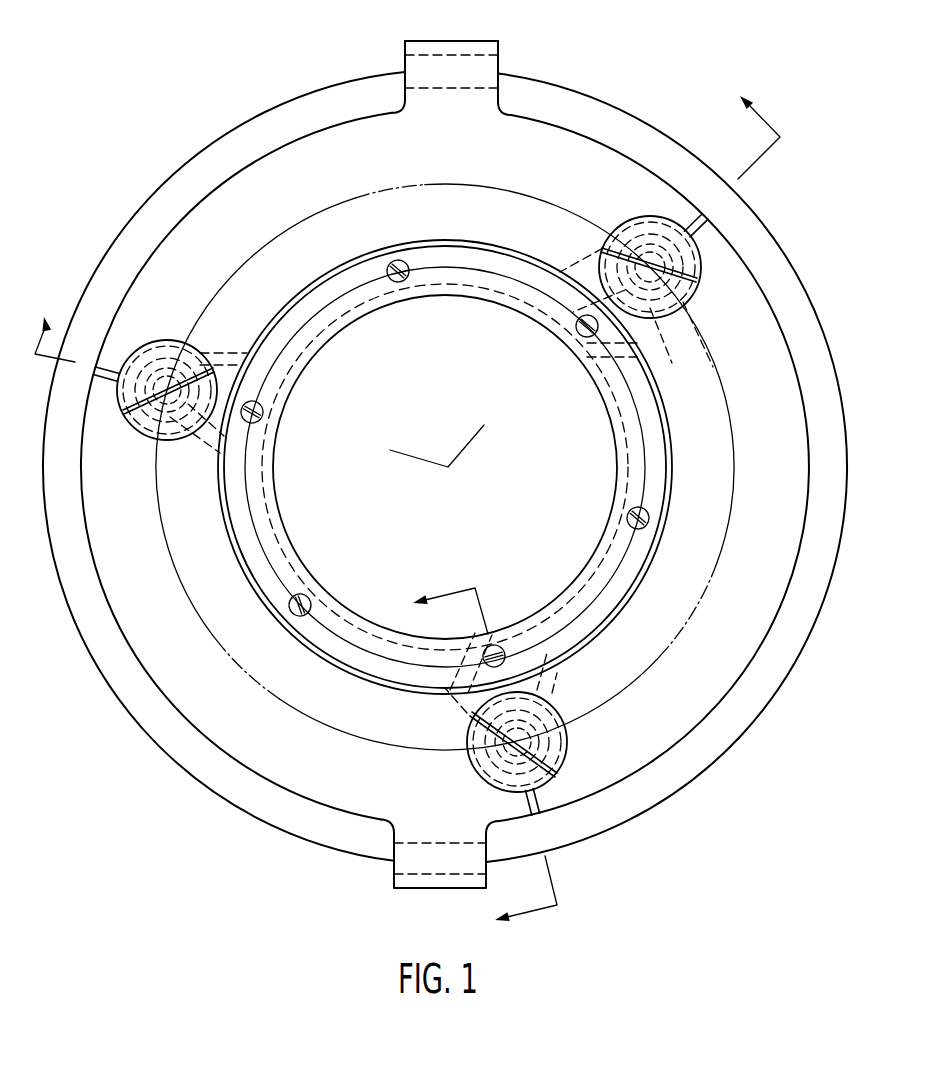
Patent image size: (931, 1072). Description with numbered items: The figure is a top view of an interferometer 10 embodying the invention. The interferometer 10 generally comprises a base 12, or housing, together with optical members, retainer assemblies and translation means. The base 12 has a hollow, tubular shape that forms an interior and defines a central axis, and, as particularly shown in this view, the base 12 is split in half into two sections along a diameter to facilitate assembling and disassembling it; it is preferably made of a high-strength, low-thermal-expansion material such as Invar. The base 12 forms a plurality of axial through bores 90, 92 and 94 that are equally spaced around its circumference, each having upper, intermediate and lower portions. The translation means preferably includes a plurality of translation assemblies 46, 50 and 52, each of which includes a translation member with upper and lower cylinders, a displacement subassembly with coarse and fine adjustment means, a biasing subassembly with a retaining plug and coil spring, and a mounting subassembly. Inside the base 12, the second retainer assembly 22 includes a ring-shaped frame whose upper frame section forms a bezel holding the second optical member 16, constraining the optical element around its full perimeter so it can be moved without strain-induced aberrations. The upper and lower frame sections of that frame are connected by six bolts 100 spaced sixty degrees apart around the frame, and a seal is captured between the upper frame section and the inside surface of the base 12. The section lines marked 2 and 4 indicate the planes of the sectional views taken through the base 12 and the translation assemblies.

The interferometer 10 is at (219, 69).
The base 12 is at (217, 723).
The second optical member 16 is at (511, 522).
The second retainer assembly 22 is at (506, 213).
The translation assembly 46 is at (133, 441).
The translation assembly 50 is at (645, 209).
The translation assembly 52 is at (581, 733).
The axial through bore 90 is at (137, 348).
The axial through bore 92 is at (700, 282).
The axial through bore 94 is at (566, 763).
The bolts 100 is at (401, 261).
The section line 2- 2 is at (407, 220).
The section line 4- 4 is at (474, 762).